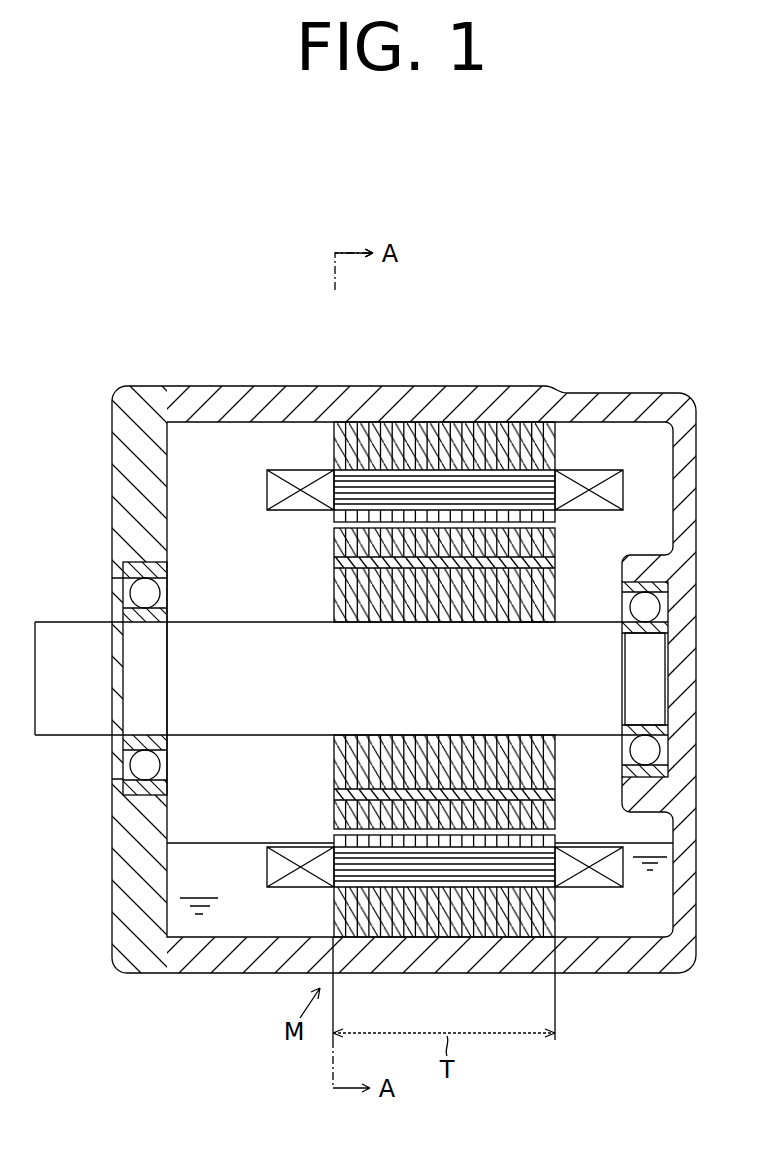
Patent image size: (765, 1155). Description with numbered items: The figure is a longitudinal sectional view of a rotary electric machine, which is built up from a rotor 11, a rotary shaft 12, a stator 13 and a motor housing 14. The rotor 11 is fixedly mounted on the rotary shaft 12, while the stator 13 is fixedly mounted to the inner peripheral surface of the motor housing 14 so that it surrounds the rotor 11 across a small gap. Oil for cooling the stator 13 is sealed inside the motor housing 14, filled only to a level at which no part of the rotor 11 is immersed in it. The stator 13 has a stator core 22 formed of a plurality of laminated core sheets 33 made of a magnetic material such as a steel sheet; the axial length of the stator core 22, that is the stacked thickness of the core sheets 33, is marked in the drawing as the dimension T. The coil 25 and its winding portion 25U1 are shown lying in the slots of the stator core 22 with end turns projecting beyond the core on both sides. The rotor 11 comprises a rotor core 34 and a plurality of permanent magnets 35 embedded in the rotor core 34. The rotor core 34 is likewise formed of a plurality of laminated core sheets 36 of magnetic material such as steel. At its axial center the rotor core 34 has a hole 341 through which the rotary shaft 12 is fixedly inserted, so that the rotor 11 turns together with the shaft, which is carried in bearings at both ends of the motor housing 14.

The rotor 11 is at (392, 678).
The rotary shaft 12 is at (215, 735).
The stator 13 is at (445, 603).
The motor housing 14 is at (170, 974).
The stator core 22 is at (444, 627).
The coil 25 is at (445, 602).
The U-phase coil 25U1 is at (390, 480).
The core sheets 33 is at (491, 424).
The rotor core 34 is at (390, 678).
The permanent magnets 35 is at (335, 563).
The core sheets 36 is at (335, 545).
The hole 341 is at (540, 637).